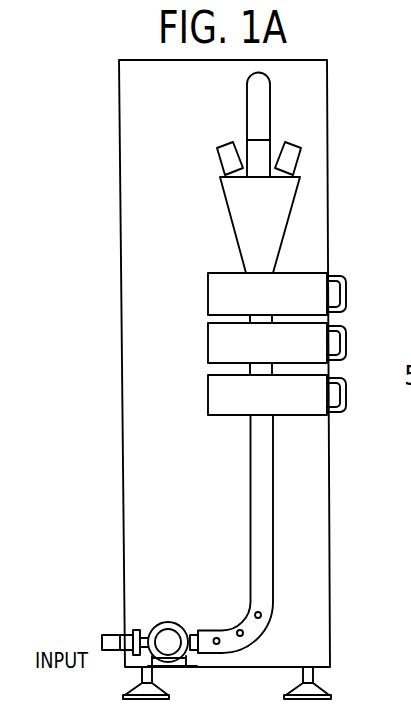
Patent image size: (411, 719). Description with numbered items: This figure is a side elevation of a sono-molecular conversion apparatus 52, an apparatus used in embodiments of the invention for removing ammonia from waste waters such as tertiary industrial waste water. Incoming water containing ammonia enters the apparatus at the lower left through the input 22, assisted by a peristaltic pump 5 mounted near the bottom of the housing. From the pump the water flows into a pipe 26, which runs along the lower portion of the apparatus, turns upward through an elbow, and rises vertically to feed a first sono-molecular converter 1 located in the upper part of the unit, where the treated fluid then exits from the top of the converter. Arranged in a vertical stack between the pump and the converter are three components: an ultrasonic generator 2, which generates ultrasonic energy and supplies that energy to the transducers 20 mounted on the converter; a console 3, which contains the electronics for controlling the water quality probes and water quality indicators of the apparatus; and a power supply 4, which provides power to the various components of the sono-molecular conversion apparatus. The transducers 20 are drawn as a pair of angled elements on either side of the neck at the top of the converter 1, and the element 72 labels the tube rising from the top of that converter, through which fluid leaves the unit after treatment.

The first sono-molecular converter 1 is at (260, 225).
The ultrasonic generator 2 is at (277, 294).
The console 3 is at (277, 343).
The power supply 4 is at (277, 395).
The peristaltic pump 5 is at (173, 644).
The transducers 20 is at (222, 161).
The input 22 is at (102, 640).
The pipe 26 is at (253, 497).
The sono-molecular conversion apparatus 52 is at (100, 370).
The inlet tube 72 is at (272, 148).